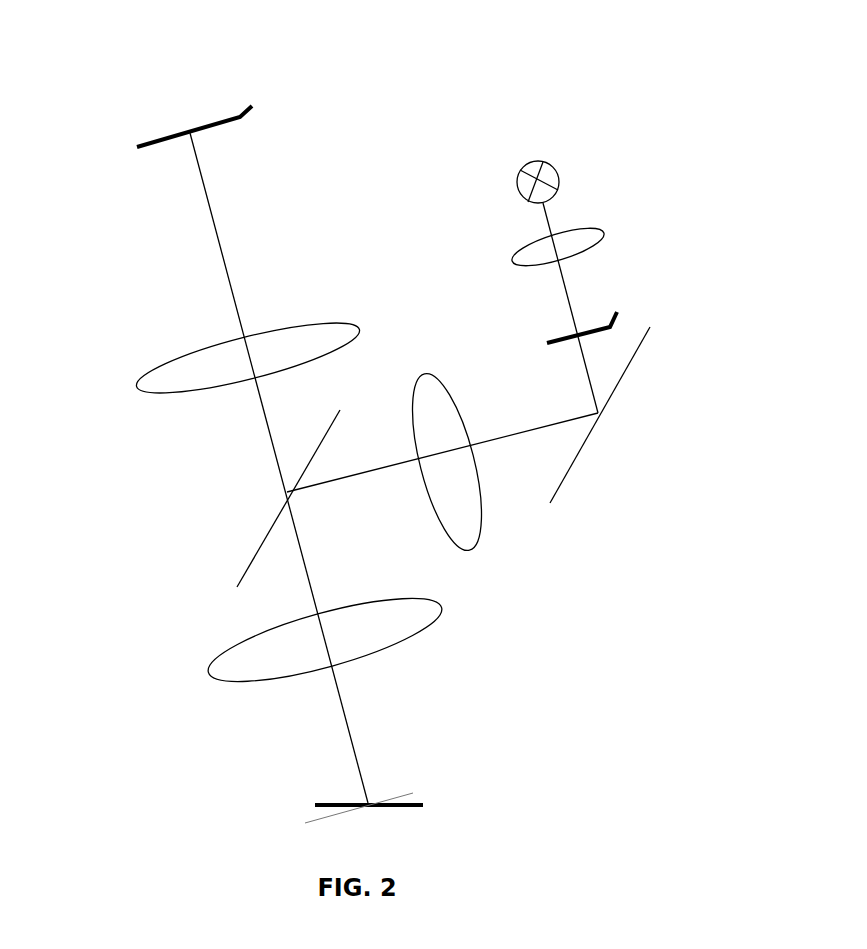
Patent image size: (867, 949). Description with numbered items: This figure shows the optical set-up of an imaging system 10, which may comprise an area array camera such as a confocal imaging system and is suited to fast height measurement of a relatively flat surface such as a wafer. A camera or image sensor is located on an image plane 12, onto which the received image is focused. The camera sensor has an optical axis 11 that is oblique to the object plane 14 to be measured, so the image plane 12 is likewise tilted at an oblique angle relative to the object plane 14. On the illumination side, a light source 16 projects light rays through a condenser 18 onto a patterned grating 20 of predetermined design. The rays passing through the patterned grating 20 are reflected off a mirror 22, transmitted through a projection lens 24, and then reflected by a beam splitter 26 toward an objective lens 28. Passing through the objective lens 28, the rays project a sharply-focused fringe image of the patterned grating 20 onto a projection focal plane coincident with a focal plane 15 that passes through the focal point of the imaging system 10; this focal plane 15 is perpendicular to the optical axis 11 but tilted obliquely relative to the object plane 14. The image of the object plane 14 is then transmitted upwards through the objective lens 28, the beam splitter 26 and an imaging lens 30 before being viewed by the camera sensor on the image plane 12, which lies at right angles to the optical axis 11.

The imaging system 10 is at (127, 207).
The optical axis 11 is at (214, 212).
The image plane 12 is at (247, 107).
The object plane 14 is at (417, 802).
The focal plane 15 is at (295, 812).
The light source 16 is at (540, 158).
The condenser 18 is at (598, 217).
The patterned grating 20 is at (613, 313).
The mirror 22 is at (647, 345).
The projection lens 24 is at (477, 540).
The beam splitter 26 is at (247, 567).
The objective lens 28 is at (200, 678).
The imaging lens 30 is at (173, 360).